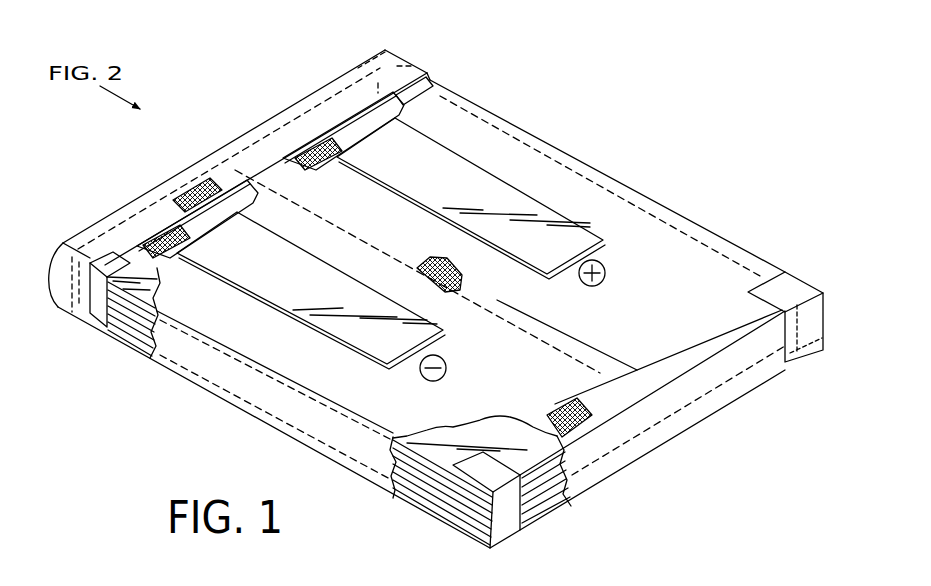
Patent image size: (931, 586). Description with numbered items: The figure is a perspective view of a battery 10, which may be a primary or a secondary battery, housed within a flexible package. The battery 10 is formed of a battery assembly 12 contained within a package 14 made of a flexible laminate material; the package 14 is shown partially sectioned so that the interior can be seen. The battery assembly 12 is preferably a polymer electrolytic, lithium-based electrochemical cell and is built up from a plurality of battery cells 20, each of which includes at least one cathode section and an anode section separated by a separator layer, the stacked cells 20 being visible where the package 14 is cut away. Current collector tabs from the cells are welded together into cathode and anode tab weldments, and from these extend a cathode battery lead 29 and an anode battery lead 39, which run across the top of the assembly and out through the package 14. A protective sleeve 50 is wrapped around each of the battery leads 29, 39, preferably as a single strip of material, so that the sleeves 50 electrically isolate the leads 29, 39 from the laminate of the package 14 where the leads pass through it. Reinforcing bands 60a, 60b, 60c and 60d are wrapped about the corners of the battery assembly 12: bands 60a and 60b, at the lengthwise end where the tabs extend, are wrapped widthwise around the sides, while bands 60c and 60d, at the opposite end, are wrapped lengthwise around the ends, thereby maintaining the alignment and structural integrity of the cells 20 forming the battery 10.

The battery 10 is at (619, 99).
The battery assembly 12 is at (474, 438).
The package 14 is at (665, 212).
The battery cells 20 is at (419, 471).
The cathode battery lead 29 is at (500, 190).
The anode battery lead 39 is at (287, 300).
The protective sleeve 50 is at (200, 200).
The reinforcing band 60a is at (98, 325).
The reinforcing band 60b is at (421, 68).
The reinforcing band 60c is at (504, 534).
The reinforcing band 60d is at (801, 287).